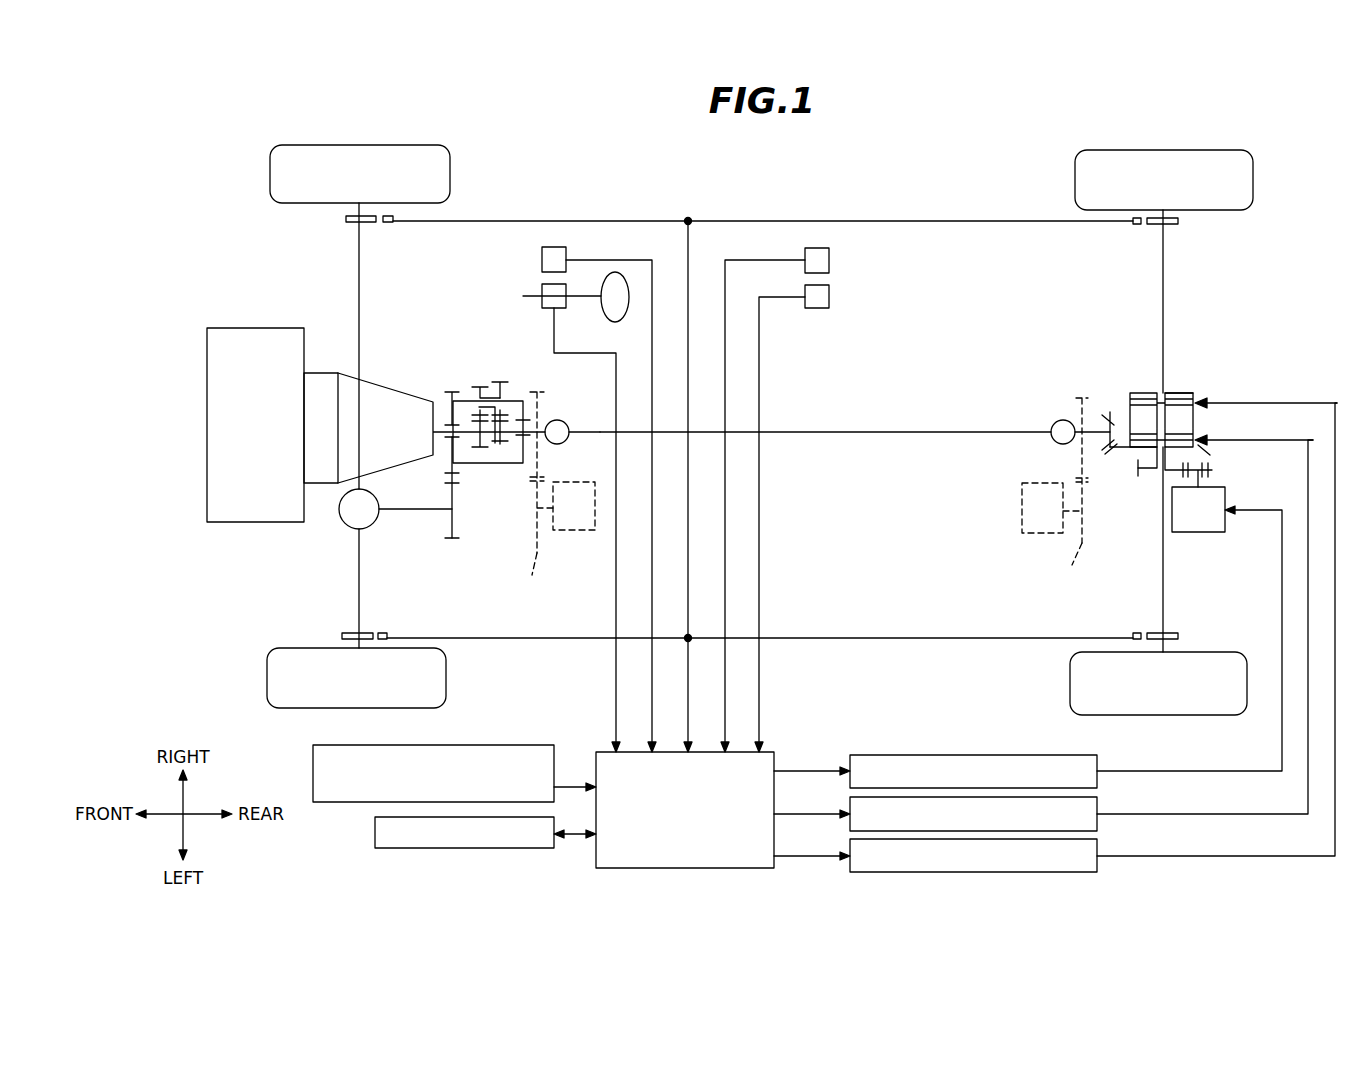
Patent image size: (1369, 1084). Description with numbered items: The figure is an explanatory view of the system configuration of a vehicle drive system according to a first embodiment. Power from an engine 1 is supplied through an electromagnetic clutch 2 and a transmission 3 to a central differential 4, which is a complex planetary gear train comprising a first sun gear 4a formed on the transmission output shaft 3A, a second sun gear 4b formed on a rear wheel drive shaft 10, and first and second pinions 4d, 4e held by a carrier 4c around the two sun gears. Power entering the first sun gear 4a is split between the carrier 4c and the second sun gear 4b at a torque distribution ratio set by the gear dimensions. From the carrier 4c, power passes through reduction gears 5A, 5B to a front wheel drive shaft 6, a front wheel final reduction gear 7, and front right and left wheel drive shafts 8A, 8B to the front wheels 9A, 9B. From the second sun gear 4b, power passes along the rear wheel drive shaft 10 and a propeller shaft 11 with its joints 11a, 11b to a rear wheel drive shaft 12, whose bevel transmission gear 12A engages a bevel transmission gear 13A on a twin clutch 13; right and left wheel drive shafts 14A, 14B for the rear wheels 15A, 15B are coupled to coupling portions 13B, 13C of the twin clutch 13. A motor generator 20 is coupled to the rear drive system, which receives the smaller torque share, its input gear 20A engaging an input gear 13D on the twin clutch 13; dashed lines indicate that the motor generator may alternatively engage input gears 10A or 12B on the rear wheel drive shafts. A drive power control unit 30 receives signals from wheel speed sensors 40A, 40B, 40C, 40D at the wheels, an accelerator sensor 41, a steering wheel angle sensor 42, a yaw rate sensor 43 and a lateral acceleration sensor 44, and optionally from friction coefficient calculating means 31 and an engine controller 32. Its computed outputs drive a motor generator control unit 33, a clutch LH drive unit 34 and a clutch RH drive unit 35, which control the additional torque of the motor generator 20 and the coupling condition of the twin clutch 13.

The engine 1 is at (260, 328).
The electromagnetic clutch 2 is at (325, 373).
The transmission 3 is at (386, 398).
The transmission output shaft 3A is at (447, 425).
The central differential 4 is at (487, 382).
The first sun gear 4a is at (480, 450).
The second sun gear 4b is at (500, 448).
The carrier 4c is at (525, 412).
The first pinion 4d is at (478, 385).
The second pinion 4e is at (508, 388).
The reduction gear 5A is at (445, 455).
The reduction gear 5B is at (455, 540).
The front wheel drive shaft 6 is at (410, 511).
The front wheel final reduction gear 7 is at (342, 520).
The front right wheel drive shaft 8A is at (359, 290).
The front left wheel drive shaft 8B is at (359, 600).
The front wheel 9A is at (270, 177).
The front wheel 9B is at (268, 690).
The rear wheel drive shaft 10 is at (548, 420).
The input gear 10A is at (547, 450).
The propeller shaft 11 is at (835, 430).
The joint 11a is at (570, 430).
The joint 11b is at (1055, 425).
The rear wheel drive shaft 12 is at (1093, 425).
The bevel transmission gear 12A is at (1115, 420).
The input gear 12B is at (1082, 462).
The twin clutch 13 is at (1218, 380).
The bevel transmission gear 13A is at (1108, 455).
The coupling portion 13B is at (1178, 393).
The coupling portion 13C is at (1200, 425).
The input gear 13D is at (1138, 478).
The right wheel drive shaft 14A is at (1163, 300).
The left wheel drive shaft 14B is at (1163, 583).
The rear wheel 15A is at (1253, 180).
The rear wheel 15B is at (1228, 652).
The motor generator 20 is at (1221, 526).
The input gear 20A is at (1228, 466).
The drive power control unit 30 is at (775, 755).
The friction coefficient calculating means 31 is at (530, 748).
The engine controller 32 is at (375, 834).
The motor generator control unit 33 is at (962, 755).
The clutch LH drive unit 34 is at (1097, 808).
The clutch RH drive unit 35 is at (1097, 850).
The wheel speed sensor 40A is at (390, 222).
The wheel speed sensor 40B is at (385, 633).
The wheel speed sensor 40C is at (1133, 221).
The wheel speed sensor 40D is at (1133, 635).
The accelerator sensor 41 is at (542, 258).
The steering wheel angle sensor 42 is at (542, 292).
The yaw rate sensor 43 is at (829, 260).
The lateral acceleration sensor 44 is at (829, 297).